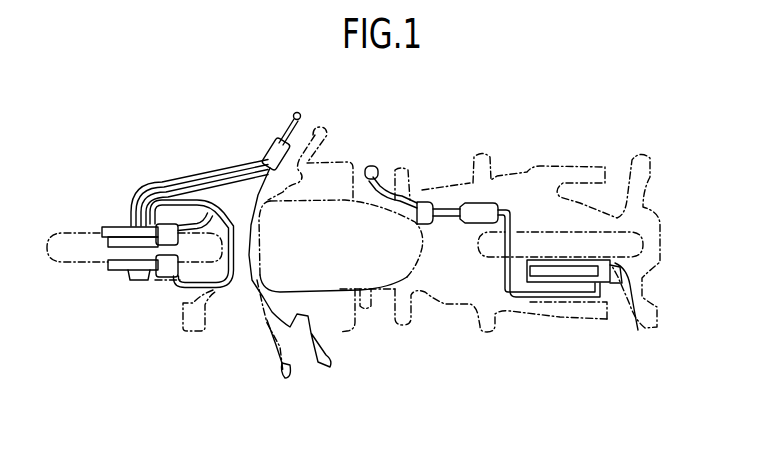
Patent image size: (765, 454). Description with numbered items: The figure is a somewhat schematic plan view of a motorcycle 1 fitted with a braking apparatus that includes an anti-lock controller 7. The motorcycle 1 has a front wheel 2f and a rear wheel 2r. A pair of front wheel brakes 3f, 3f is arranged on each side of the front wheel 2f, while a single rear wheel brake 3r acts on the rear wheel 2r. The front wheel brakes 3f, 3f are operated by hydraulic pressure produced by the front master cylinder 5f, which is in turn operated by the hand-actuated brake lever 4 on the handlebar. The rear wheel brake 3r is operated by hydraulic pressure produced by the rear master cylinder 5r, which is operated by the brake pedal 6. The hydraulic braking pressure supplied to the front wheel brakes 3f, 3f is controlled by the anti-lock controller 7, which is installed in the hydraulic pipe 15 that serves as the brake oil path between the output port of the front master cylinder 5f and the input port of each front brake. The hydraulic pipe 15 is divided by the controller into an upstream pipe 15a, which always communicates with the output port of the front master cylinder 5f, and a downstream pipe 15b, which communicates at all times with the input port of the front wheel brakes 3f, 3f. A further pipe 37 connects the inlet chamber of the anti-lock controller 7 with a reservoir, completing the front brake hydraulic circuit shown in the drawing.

The motorcycle 1 is at (447, 172).
The front wheel 2f is at (62, 265).
The rear wheel 2r is at (643, 238).
The front wheel brake 3f is at (123, 222).
The rear wheel brake 3r is at (613, 280).
The brake lever 4 is at (292, 119).
The front master cylinder 5f is at (266, 154).
The rear master cylinder 5r is at (530, 239).
The brake pedal 6 is at (368, 165).
The anti-lock controller 7 is at (104, 228).
The hydraulic pipe 15 is at (215, 172).
The upstream pipe 15a is at (161, 186).
The downstream pipe 15b is at (242, 248).
The pipe 37 is at (175, 180).